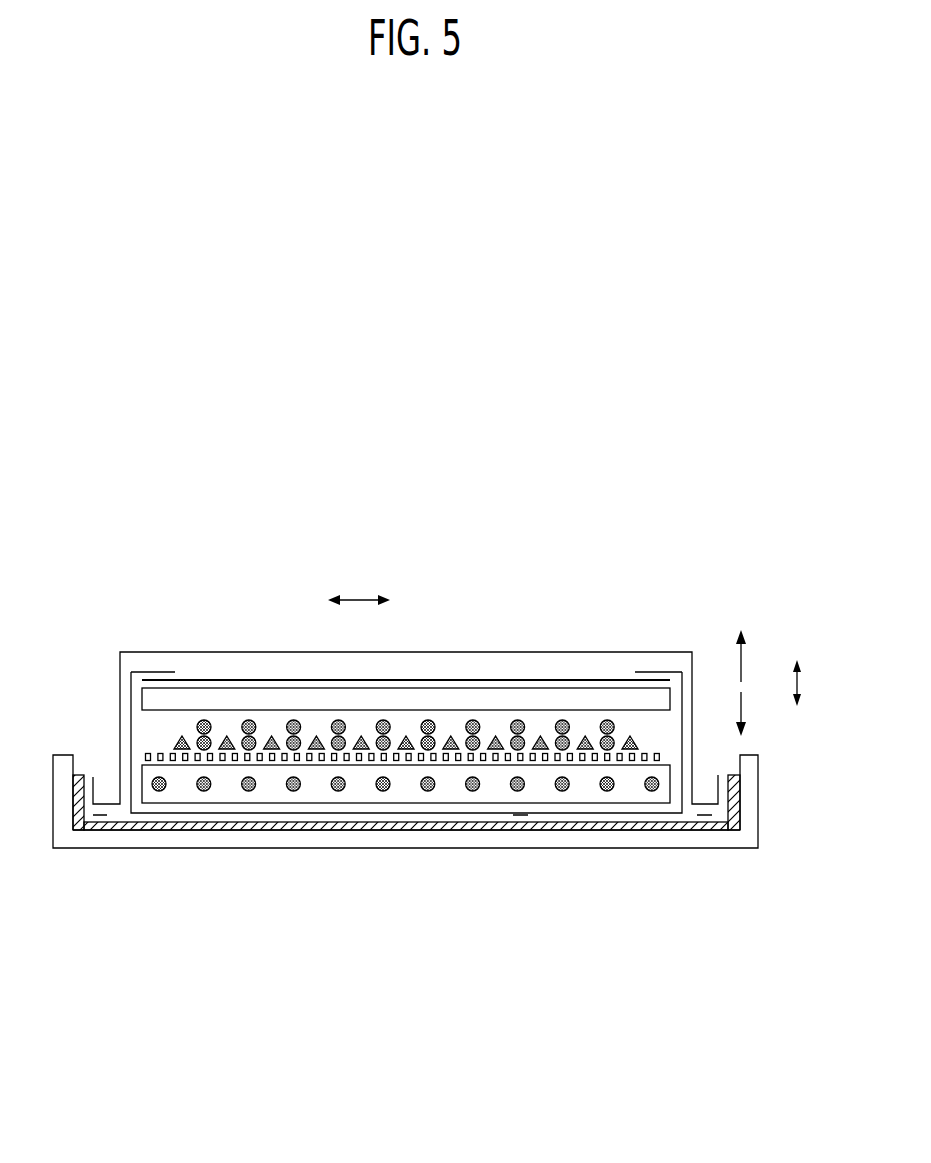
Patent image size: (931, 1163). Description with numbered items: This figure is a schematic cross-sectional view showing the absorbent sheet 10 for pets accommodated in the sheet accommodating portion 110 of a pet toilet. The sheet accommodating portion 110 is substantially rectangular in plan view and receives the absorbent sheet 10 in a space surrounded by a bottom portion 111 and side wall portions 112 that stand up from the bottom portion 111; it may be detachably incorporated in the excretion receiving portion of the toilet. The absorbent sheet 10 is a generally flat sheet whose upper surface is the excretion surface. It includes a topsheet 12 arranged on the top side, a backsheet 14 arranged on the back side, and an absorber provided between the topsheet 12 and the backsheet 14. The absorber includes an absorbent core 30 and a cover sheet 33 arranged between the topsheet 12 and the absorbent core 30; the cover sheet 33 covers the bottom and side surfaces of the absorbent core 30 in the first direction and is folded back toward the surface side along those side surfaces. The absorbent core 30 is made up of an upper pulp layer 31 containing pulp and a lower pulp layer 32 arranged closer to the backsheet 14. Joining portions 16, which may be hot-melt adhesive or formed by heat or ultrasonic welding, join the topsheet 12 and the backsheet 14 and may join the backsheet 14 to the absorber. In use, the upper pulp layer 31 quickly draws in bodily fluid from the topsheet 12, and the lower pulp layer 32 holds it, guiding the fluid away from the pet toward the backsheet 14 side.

The absorbent sheet 10 is at (627, 619).
The topsheet 12 is at (502, 652).
The backsheet 14 is at (698, 823).
The joining portions 16 is at (94, 816).
The absorbent core 30 is at (406, 734).
The upper pulp layer 31 is at (297, 697).
The lower pulp layer 32 is at (272, 783).
The cover sheet 33 is at (192, 813).
The sheet accommodating portion 110 is at (758, 797).
The bottom portion 111 is at (128, 817).
The side wall portions 112 is at (80, 775).